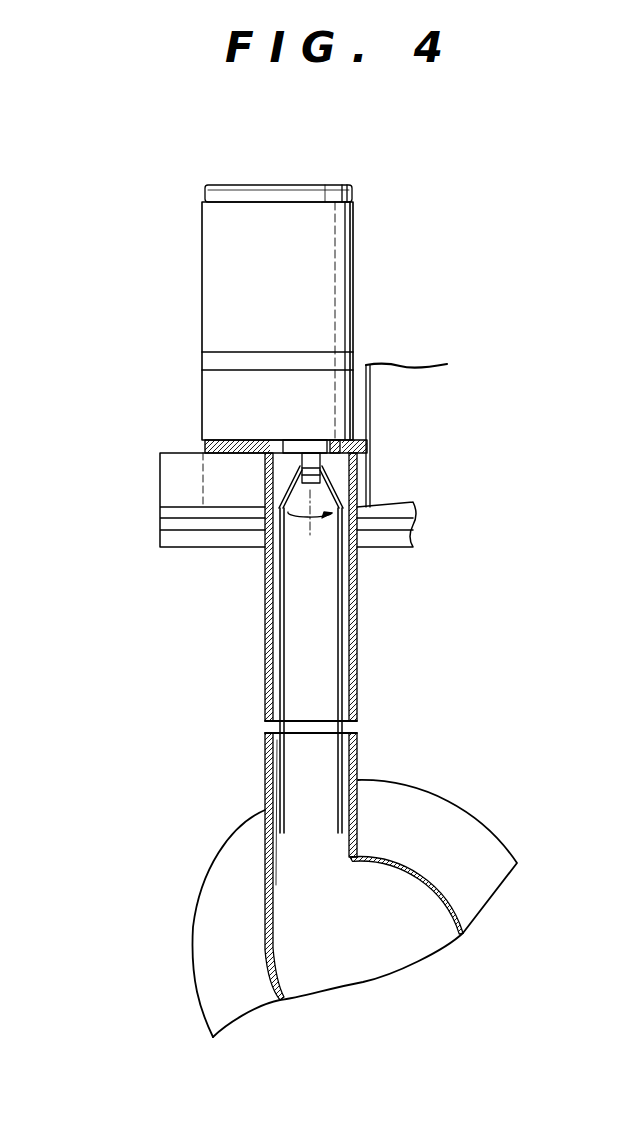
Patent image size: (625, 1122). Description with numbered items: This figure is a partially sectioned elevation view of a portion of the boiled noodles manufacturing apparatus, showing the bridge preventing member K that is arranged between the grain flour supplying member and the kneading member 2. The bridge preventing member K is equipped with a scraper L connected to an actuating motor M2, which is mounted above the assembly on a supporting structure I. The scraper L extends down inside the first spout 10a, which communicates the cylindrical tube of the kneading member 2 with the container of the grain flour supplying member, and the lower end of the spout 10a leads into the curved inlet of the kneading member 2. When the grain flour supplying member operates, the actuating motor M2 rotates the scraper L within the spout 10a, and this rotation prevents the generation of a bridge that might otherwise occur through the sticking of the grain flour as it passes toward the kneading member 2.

The actuating motor M2 is at (213, 284).
The bracket I is at (406, 383).
The bridge preventing member K is at (340, 478).
The scraper L is at (344, 630).
The spout 10a is at (262, 687).
The kneading member 2 is at (424, 857).